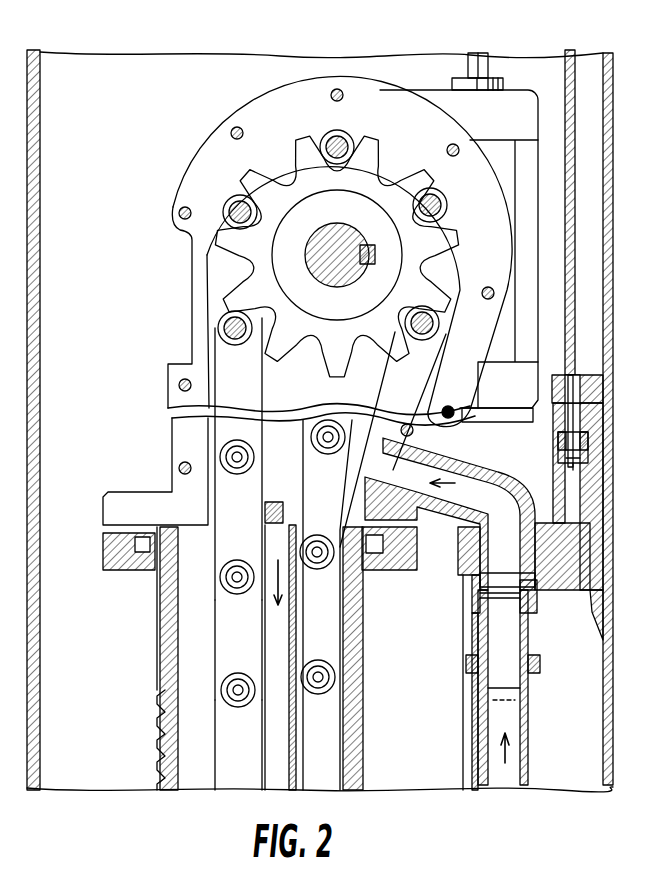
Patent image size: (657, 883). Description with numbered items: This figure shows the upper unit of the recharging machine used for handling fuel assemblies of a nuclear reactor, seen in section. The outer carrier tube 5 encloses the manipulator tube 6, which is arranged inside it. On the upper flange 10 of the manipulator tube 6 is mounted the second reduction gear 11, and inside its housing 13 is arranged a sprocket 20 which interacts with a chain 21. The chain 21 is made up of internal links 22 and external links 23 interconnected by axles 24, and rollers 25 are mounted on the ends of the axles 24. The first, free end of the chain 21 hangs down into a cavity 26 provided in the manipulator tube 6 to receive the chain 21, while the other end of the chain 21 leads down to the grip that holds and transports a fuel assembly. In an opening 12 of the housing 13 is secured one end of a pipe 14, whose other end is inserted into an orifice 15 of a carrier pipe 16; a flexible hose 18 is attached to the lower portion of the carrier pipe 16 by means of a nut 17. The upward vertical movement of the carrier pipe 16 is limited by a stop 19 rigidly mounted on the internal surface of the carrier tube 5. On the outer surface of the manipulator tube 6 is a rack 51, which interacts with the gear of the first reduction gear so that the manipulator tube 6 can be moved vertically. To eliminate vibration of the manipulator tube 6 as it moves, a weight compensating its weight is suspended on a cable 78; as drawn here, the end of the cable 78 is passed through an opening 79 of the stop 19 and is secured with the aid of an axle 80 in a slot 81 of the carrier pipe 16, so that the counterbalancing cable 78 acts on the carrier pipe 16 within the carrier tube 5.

The carrier tube 5 is at (609, 748).
The manipulator tube 6 is at (148, 652).
The upper flange 10 is at (121, 570).
The second reduction gear 11 is at (501, 162).
The opening 12 is at (392, 445).
The housing 13 is at (466, 168).
The pipe 14 is at (514, 490).
The orifice 15 is at (505, 595).
The carrier pipe 16 is at (576, 523).
The nut 17 is at (541, 666).
The flexible hose 18 is at (528, 740).
The stop 19 is at (600, 382).
The sprocket 20 is at (377, 183).
The chain 21 is at (211, 574).
The internal links 22 is at (232, 628).
The external links 23 is at (232, 732).
The axles 24 is at (236, 456).
The rollers 25 is at (237, 470).
The cavity 26 is at (318, 770).
The rack 51 is at (158, 738).
The cable 78 is at (572, 62).
The opening 79 is at (571, 375).
The axle 80 is at (590, 440).
The slot 81 is at (578, 478).